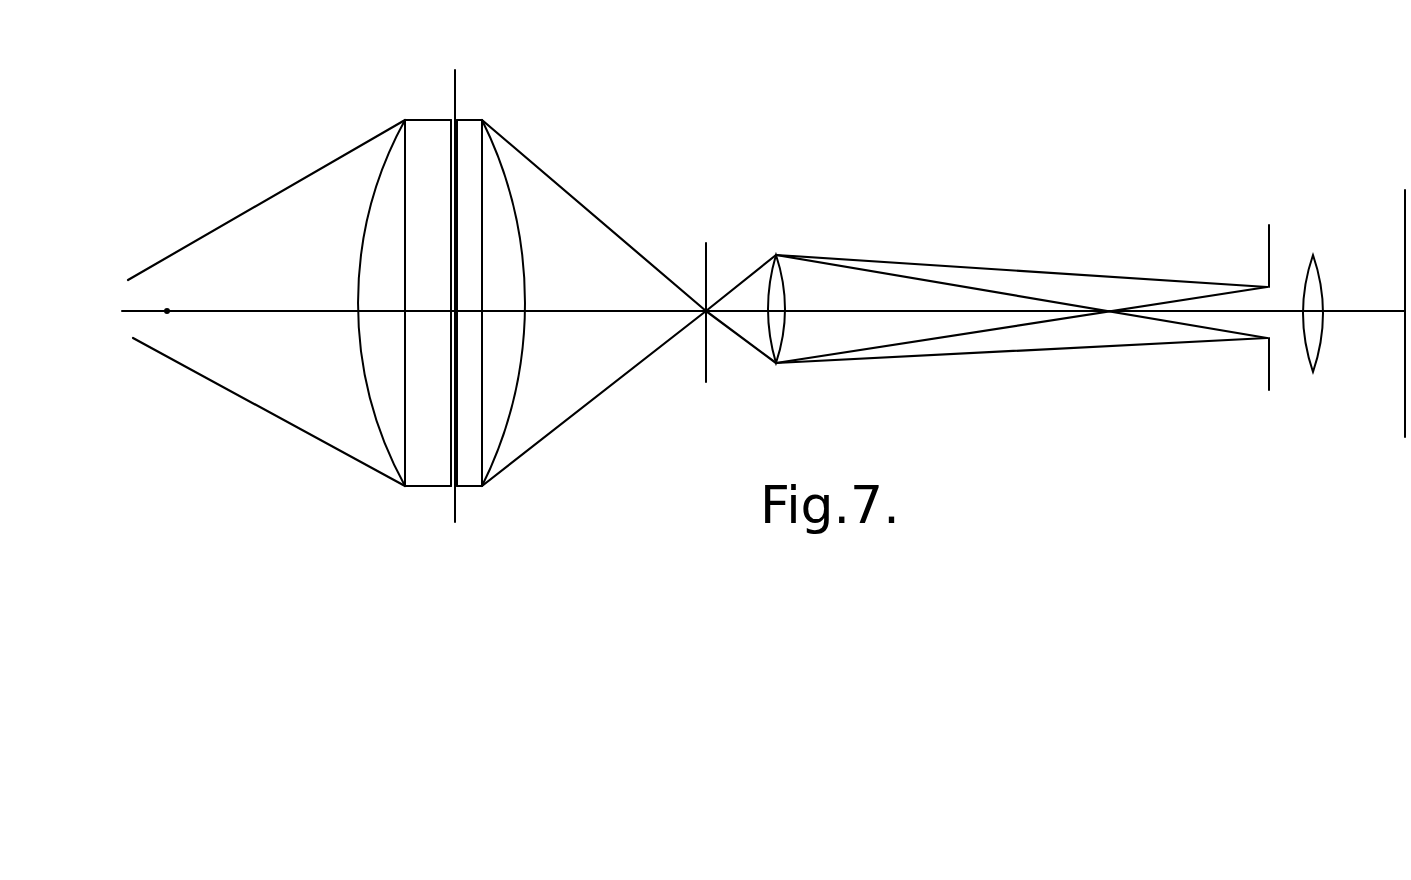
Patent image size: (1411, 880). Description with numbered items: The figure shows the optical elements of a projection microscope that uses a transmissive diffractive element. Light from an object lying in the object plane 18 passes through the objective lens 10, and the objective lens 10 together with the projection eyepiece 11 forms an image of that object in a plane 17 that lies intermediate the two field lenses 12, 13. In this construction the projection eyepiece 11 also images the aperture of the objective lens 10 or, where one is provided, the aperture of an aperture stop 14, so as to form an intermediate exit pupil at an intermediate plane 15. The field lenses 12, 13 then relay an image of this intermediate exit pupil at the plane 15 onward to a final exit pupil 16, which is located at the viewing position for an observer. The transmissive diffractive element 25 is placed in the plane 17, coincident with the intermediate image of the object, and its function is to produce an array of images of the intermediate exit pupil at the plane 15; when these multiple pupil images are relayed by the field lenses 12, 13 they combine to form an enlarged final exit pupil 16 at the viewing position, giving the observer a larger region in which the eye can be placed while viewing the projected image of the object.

The objective lens 10 is at (1317, 269).
The projection eyepiece 11 is at (776, 366).
The field lens 12 is at (482, 120).
The field lens 13 is at (405, 120).
The aperture stop 14 is at (1269, 250).
The intermediate plane 15 is at (706, 268).
The final exit pupil 16 is at (168, 309).
The plane 17 is at (450, 487).
The object plane 18 is at (1405, 408).
The transmissive diffractive element 25 is at (451, 148).